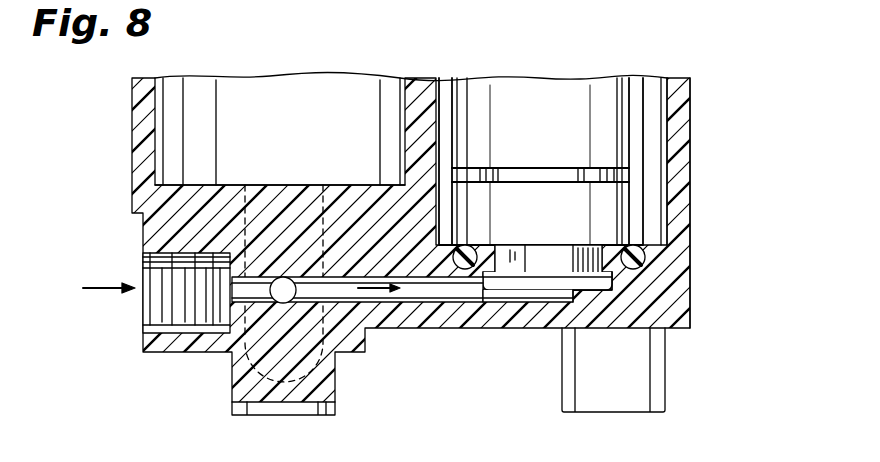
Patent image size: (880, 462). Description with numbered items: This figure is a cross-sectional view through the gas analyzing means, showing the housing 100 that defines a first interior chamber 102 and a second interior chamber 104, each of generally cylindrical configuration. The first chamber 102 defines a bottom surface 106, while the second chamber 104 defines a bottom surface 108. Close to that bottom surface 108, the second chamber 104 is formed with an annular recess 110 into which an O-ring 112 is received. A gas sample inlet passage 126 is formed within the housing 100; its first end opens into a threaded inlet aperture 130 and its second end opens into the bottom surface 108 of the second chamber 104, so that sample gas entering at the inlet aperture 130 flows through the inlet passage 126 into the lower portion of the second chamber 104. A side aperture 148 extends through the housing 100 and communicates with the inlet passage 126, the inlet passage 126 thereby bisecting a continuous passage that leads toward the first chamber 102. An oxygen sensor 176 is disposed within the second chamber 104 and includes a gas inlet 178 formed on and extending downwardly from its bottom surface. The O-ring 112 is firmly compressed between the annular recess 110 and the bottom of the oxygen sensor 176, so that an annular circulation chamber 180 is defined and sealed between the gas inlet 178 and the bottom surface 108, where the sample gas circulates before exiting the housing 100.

The housing 100 is at (130, 132).
The first interior chamber 102 is at (298, 95).
The second interior chamber 104 is at (655, 90).
The bottom surface 106 is at (233, 188).
The bottom surface 108 is at (603, 288).
The annular recess 110 is at (688, 262).
The O-ring 112 is at (470, 246).
The gas sample inlet passage 126 is at (423, 293).
The threaded inlet aperture 130 is at (162, 300).
The side aperture 148 is at (284, 277).
The oxygen sensor 176 is at (538, 98).
The gas inlet 178 is at (553, 255).
The annular circulation chamber 180 is at (508, 285).